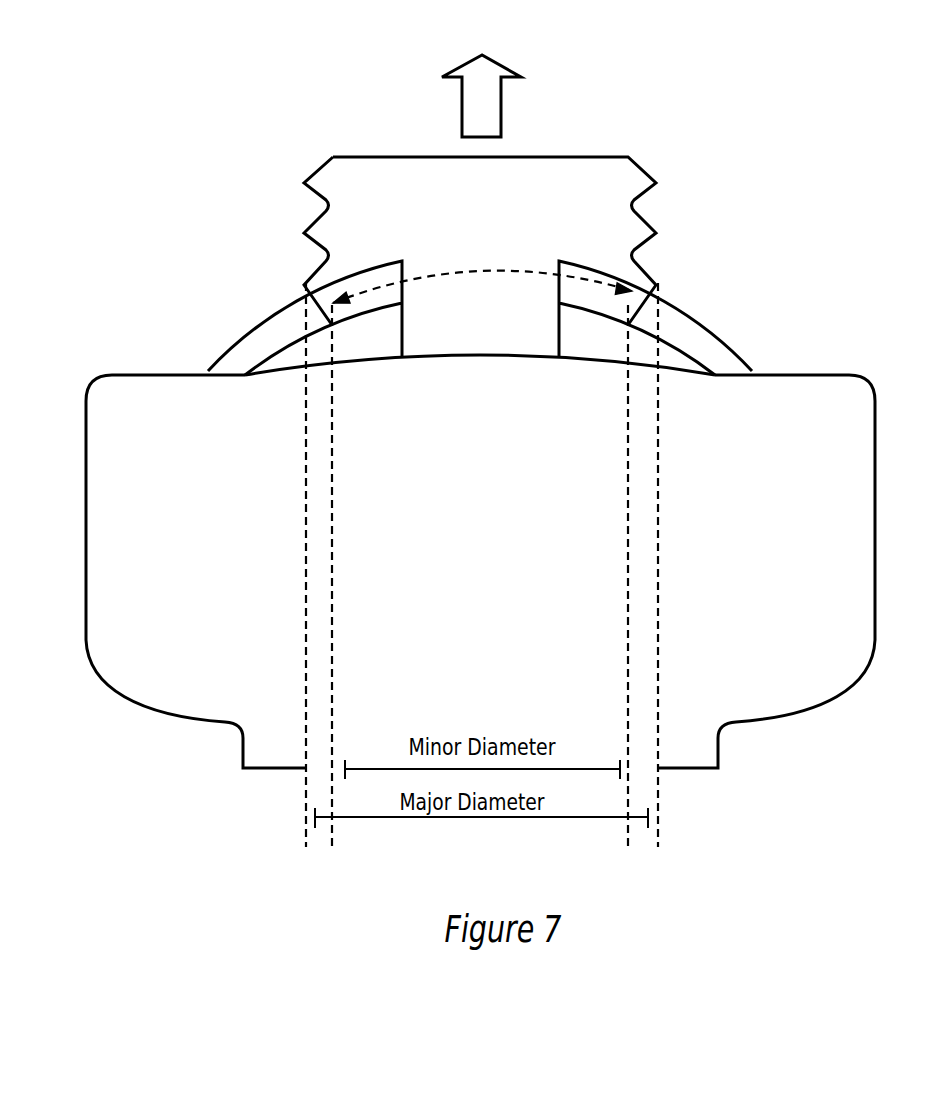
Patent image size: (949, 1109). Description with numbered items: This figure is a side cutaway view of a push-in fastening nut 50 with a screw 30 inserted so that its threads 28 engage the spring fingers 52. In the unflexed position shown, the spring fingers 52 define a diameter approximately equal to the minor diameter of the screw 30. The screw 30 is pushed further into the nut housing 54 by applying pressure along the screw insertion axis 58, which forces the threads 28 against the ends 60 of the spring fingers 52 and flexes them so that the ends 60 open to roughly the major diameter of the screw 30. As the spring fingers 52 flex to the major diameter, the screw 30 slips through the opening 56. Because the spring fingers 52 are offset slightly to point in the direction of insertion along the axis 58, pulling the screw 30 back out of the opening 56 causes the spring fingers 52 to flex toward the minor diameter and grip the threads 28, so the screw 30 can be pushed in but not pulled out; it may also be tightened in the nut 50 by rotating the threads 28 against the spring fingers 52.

The threads 28 is at (549, 237).
The screw 30 is at (468, 188).
The push-in fastening nut 50 is at (500, 511).
The spring fingers 52 is at (354, 349).
The nut housing 54 is at (182, 444).
The opening 56 is at (467, 444).
The screw insertion axis 58 is at (468, 124).
The ends 60 is at (345, 287).